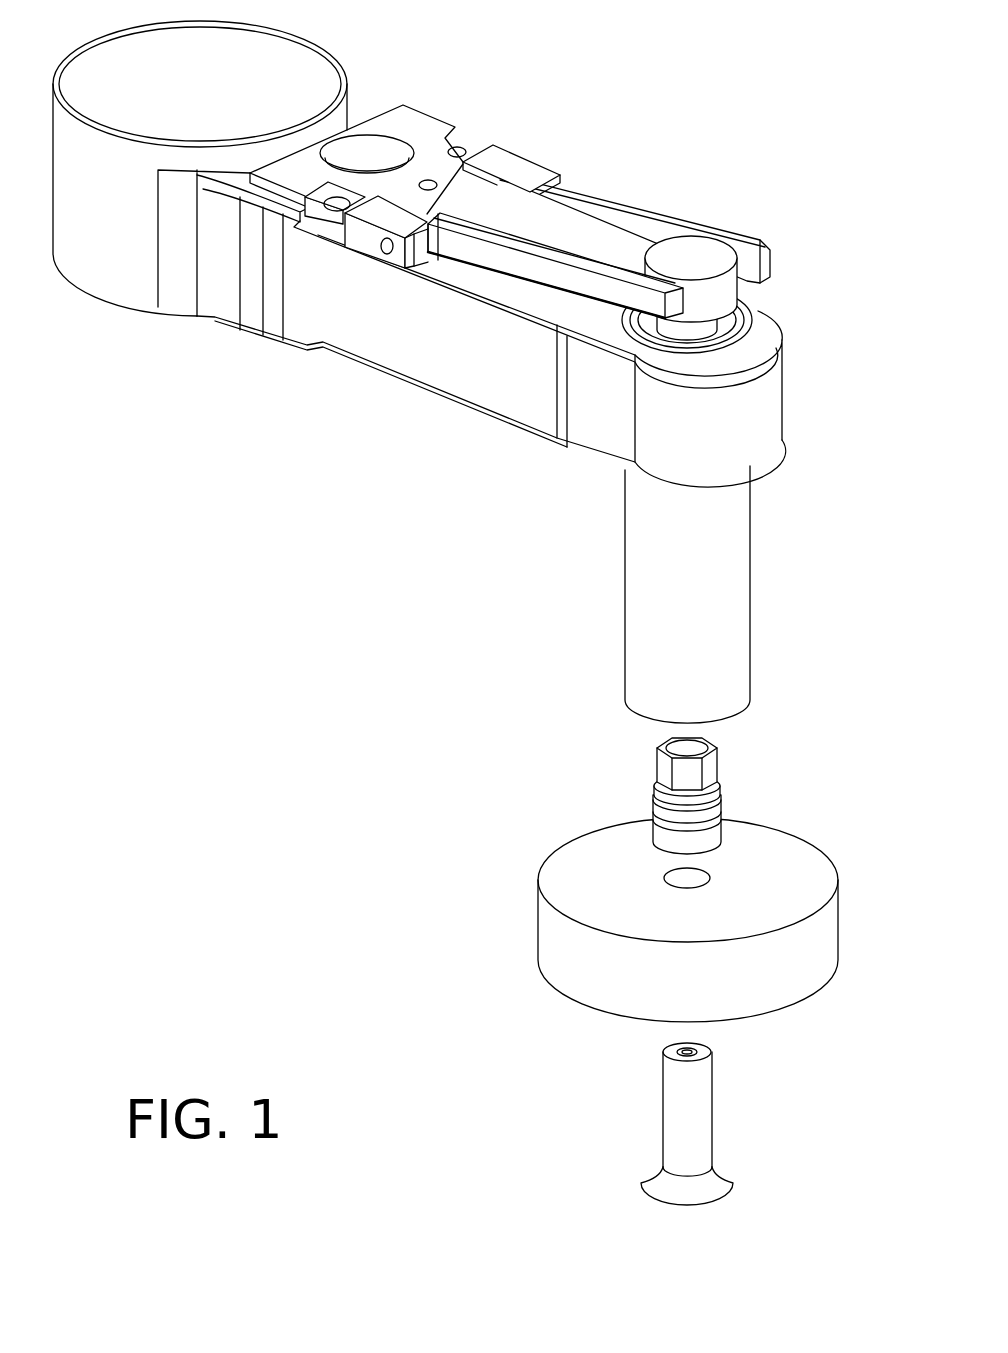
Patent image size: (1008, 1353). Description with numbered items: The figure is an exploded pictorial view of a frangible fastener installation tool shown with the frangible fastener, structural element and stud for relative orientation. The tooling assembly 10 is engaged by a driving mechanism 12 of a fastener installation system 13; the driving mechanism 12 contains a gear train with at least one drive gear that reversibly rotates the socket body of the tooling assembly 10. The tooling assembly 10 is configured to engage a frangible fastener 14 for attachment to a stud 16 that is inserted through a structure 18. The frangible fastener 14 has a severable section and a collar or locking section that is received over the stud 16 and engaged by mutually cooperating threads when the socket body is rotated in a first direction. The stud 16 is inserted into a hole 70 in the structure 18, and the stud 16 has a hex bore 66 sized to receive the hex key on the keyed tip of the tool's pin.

The tooling assembly 10 is at (716, 557).
The driving mechanism 12 is at (462, 366).
The fastener installation system 13 is at (451, 550).
The frangible fastener 14 is at (661, 799).
The stud 16 is at (712, 1107).
The structure 18 is at (540, 938).
The hex bore 66 is at (682, 1050).
The hole 70 is at (695, 876).